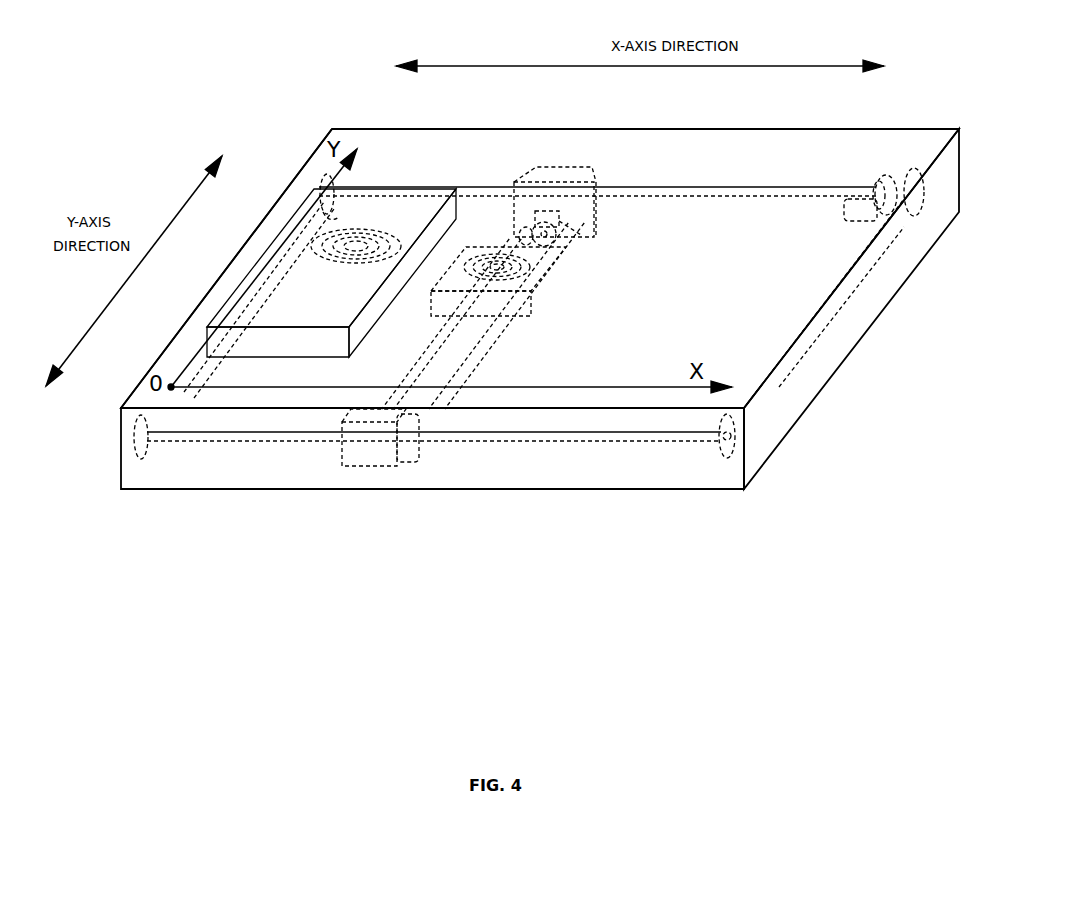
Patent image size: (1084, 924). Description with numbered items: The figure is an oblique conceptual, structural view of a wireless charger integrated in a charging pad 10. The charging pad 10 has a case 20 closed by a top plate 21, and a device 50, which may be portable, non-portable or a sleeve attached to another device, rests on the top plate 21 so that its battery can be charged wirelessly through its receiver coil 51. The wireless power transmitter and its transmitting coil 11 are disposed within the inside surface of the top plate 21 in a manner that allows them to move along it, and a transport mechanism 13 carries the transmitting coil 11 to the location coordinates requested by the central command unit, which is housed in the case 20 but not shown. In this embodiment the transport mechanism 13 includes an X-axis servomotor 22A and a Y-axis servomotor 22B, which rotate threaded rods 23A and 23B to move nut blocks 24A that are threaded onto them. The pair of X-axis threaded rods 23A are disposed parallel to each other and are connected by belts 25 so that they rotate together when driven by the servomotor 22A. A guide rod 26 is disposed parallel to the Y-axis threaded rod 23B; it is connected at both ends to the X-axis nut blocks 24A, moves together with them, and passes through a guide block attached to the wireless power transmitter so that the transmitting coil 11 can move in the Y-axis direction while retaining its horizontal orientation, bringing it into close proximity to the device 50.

The charging pad 10 is at (800, 100).
The transmitting coil 11 is at (563, 293).
The transport mechanism 13 is at (602, 153).
The case 20 is at (780, 416).
The top plate 21 is at (622, 378).
The X-axis servomotor 22A is at (845, 210).
The Y-axis servomotor 22B is at (598, 228).
The X-axis threaded rods 23A is at (722, 199).
The Y-axis threaded rod 23B is at (418, 362).
The nut blocks 24A is at (553, 167).
The belts 25 is at (178, 372).
The guide rod 26 is at (497, 355).
The device 50 is at (273, 353).
The receiver coil 51 is at (383, 228).